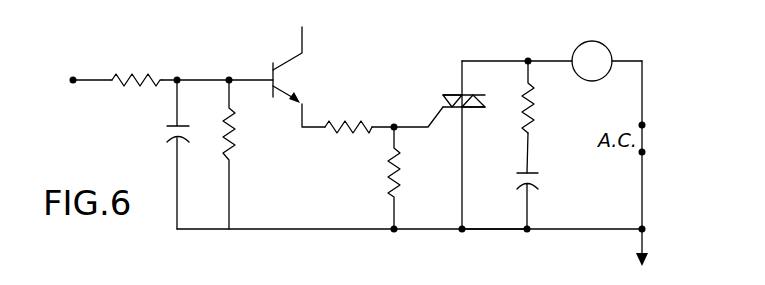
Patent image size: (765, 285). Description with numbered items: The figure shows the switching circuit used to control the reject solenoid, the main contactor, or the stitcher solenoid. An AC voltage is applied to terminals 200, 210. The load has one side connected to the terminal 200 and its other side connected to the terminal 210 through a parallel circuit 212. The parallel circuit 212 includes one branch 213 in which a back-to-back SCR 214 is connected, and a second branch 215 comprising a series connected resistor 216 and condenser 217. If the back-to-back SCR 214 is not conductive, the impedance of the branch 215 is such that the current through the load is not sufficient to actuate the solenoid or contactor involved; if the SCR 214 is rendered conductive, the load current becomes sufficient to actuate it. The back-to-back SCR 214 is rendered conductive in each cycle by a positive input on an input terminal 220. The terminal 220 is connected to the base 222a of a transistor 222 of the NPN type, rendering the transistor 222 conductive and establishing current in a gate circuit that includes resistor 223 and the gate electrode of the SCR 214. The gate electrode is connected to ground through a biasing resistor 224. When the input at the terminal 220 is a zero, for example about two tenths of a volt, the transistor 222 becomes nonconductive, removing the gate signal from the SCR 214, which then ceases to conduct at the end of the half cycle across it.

The terminal 200 is at (642, 125).
The terminal 210 is at (642, 152).
The parallel circuit 212 is at (520, 168).
The branch 213 is at (462, 150).
The back-to-back SCR 214 is at (442, 101).
The second branch 215 is at (527, 150).
The resistor 216 is at (534, 104).
The condenser 217 is at (538, 182).
The input terminal 220 is at (73, 80).
The transistor 222 is at (280, 78).
The base 222a is at (252, 80).
The resistor 223 is at (353, 138).
The biasing resistor 224 is at (399, 190).